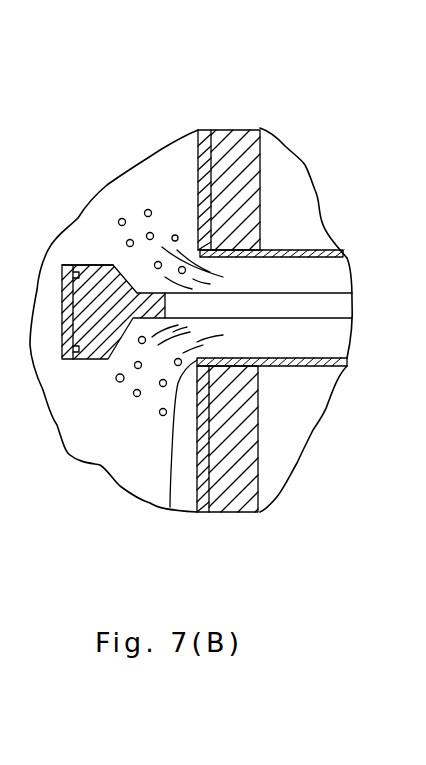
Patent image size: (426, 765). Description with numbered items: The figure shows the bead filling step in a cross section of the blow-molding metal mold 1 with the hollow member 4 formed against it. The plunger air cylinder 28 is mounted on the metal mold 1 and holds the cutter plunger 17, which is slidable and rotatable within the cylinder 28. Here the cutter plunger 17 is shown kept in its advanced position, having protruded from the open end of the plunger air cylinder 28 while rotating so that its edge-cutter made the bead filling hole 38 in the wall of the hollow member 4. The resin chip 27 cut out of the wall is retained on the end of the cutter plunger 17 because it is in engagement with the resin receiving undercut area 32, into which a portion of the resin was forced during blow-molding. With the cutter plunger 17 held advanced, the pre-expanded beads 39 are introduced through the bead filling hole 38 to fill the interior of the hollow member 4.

The blow-molding metal mold 1 is at (233, 511).
The hollow member 4 is at (204, 128).
The cutter plunger 17 is at (92, 263).
The chip 27 is at (63, 290).
The plunger air cylinder 28 is at (320, 367).
The resin receiving undercut area 32 is at (77, 359).
The bead filling hole 38 is at (172, 504).
The pre-expanded beads 39 is at (118, 378).